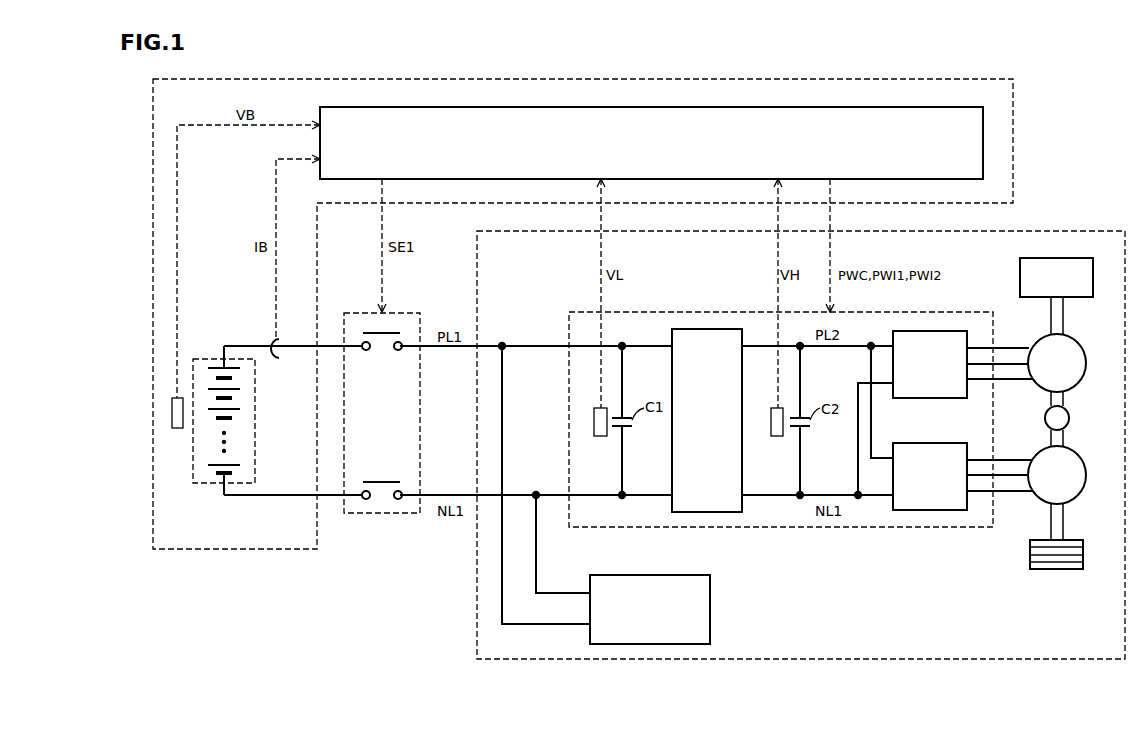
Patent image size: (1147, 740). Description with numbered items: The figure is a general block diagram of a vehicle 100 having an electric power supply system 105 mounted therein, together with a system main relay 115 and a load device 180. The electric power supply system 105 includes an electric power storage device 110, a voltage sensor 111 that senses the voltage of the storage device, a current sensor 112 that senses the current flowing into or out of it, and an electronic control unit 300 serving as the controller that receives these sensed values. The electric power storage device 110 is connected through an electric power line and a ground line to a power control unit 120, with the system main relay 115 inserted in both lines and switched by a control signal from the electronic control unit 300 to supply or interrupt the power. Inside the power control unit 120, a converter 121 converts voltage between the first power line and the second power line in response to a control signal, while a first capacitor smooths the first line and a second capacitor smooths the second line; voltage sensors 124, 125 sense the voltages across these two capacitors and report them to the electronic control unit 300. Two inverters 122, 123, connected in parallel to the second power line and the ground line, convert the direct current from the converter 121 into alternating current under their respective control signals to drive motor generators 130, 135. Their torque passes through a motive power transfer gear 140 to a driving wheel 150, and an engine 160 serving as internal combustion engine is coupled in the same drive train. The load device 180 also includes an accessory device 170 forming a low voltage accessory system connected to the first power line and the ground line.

The vehicle 100 is at (1069, 88).
The electric power supply system 105 is at (934, 79).
The electric power storage device 110 is at (195, 359).
The voltage sensor 111 is at (176, 428).
The current sensor 112 is at (269, 338).
The system main relay 115 is at (405, 313).
The power control unit 120 is at (627, 313).
The converter 121 is at (707, 329).
The inverter 122 is at (928, 331).
The inverter 123 is at (930, 443).
The voltage sensor 124 is at (600, 436).
The voltage sensor 125 is at (777, 436).
The motor generator 130 is at (1079, 341).
The motor generator 135 is at (1078, 451).
The motive power transfer gear 140 is at (1069, 418).
The driving wheel 150 is at (1075, 540).
The engine 160 is at (1072, 258).
The accessory device 170 is at (683, 575).
The load device 180 is at (1062, 231).
The electronic control unit 300 is at (934, 107).